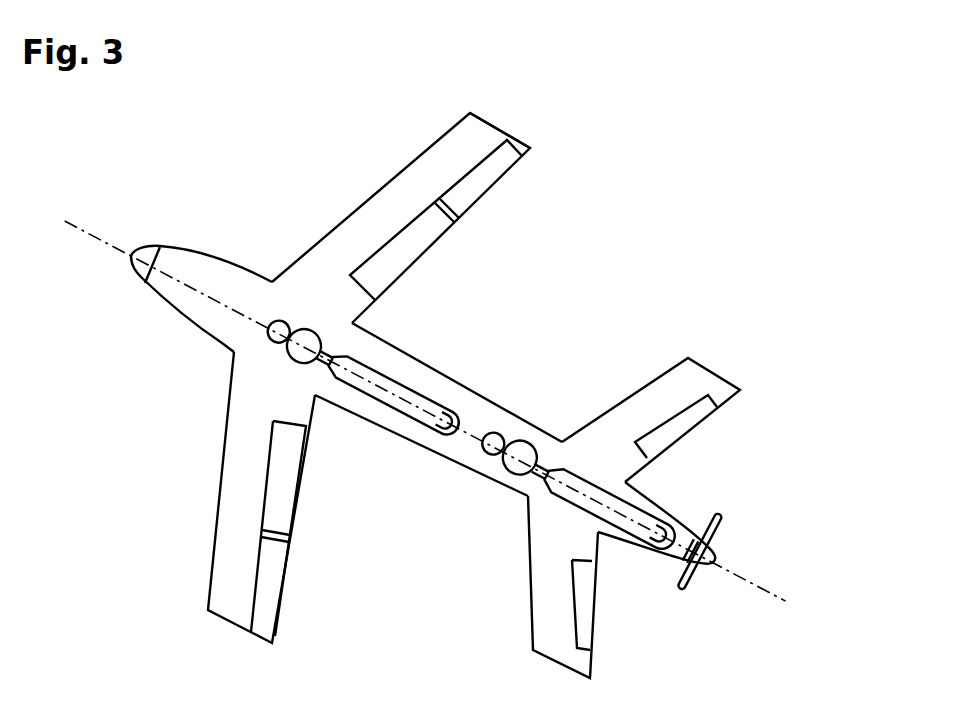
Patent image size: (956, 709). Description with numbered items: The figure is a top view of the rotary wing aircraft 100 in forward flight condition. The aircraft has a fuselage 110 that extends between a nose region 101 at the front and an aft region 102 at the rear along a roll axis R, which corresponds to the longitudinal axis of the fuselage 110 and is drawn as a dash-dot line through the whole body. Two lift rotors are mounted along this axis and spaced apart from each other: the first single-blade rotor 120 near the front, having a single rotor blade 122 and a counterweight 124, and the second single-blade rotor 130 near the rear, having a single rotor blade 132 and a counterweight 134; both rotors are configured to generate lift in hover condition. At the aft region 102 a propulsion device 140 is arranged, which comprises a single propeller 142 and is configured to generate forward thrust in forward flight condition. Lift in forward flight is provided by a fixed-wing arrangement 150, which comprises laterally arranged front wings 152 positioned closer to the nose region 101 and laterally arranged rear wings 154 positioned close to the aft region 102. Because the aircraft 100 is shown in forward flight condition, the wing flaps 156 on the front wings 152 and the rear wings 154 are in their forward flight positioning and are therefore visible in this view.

The rotary wing aircraft 100 is at (592, 212).
The nose region 101 is at (116, 262).
The aft region 102 is at (732, 555).
The fuselage 110 is at (175, 292).
The first single-blade rotor 120 is at (371, 398).
The single rotor blade 122 is at (395, 397).
The counterweight 124 is at (220, 345).
The second single-blade rotor 130 is at (555, 497).
The single rotor blade 132 is at (627, 520).
The counterweight 134 is at (480, 456).
The propulsion device 140 is at (736, 561).
The propeller 142 is at (718, 522).
The fixed-wing arrangement 150 is at (433, 196).
The front wings 152 is at (485, 138).
The rear wings 154 is at (648, 405).
The wing flaps 156 is at (489, 172).
The roll axis R is at (767, 593).